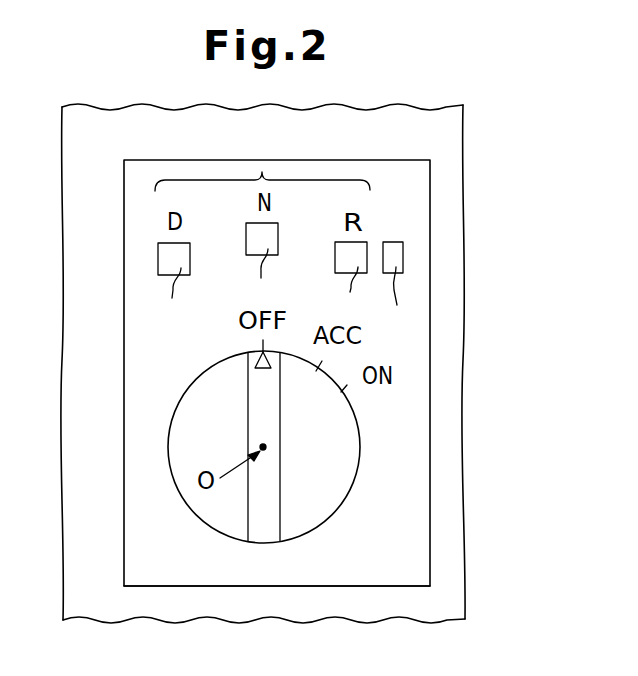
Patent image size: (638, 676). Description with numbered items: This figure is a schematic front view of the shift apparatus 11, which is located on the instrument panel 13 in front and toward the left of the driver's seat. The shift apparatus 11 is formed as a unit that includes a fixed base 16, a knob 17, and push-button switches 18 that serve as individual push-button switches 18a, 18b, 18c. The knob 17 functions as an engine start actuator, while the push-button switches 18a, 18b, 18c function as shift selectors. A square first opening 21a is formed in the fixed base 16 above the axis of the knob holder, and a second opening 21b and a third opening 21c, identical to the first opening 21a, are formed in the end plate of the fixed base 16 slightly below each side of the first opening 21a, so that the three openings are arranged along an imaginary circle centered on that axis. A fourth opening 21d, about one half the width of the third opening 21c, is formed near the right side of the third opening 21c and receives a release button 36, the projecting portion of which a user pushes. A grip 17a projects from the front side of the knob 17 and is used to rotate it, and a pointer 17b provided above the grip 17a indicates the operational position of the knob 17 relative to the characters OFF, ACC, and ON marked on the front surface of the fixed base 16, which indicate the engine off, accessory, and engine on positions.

The shift apparatus 11 is at (434, 211).
The instrument panel 13 is at (447, 277).
The fixed base 16 is at (425, 422).
The knob 17 is at (327, 507).
The grip 17a is at (272, 421).
The pointer 17b is at (263, 370).
The push-button switches 18 is at (262, 171).
The push-button switch 18a is at (254, 228).
The push-button switch 18b is at (158, 258).
The push-button switch 18c is at (335, 256).
The first opening 21a is at (268, 278).
The second opening 21b is at (178, 299).
The third opening 21c is at (353, 293).
The fourth opening 21d is at (403, 301).
The release button 36 is at (393, 248).